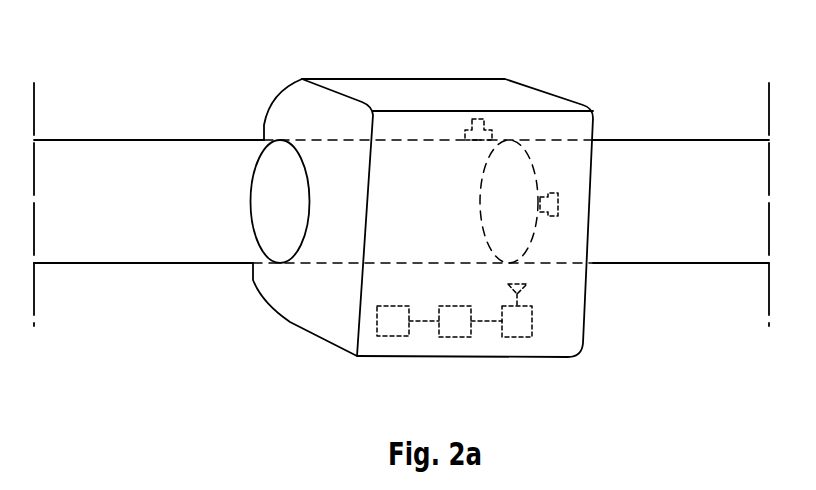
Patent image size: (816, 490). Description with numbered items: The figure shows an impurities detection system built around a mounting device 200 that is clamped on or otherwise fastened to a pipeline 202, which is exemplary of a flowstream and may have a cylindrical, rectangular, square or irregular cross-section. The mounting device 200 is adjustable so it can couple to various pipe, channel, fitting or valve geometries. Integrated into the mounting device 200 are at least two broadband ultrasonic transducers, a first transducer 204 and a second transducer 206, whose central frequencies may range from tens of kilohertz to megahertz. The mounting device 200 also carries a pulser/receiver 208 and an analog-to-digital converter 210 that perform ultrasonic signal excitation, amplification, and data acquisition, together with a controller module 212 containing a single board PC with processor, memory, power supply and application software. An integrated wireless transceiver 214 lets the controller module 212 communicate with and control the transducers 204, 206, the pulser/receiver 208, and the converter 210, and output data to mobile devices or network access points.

The mounting device 200 is at (412, 80).
The pipeline 202 is at (700, 140).
The first transducer 204 is at (486, 122).
The second transducer 206 is at (557, 201).
The pulser/receiver 208 is at (378, 337).
The analog-to-digital (A/D) converter 210 is at (471, 337).
The controller module 212 is at (532, 337).
The wireless transceiver 214 is at (527, 287).